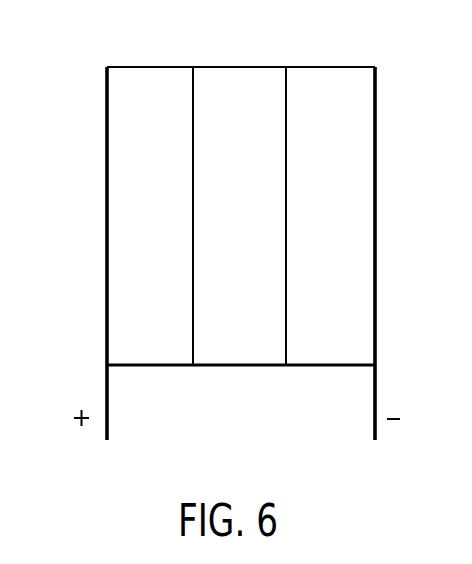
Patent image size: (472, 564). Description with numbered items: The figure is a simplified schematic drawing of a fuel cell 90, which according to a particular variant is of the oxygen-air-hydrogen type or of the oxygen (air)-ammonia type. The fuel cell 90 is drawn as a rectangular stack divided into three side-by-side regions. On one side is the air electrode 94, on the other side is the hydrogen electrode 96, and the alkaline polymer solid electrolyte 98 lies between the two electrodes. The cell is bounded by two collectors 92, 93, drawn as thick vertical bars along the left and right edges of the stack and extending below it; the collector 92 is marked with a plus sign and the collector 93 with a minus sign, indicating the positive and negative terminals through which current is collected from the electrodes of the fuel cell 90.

The fuel cell 90 is at (255, 61).
The collector 92 is at (100, 386).
The collector 93 is at (380, 388).
The air electrode 94 is at (155, 83).
The hydrogen electrode 96 is at (330, 80).
The alkaline polymer solid electrolyte 98 is at (217, 350).